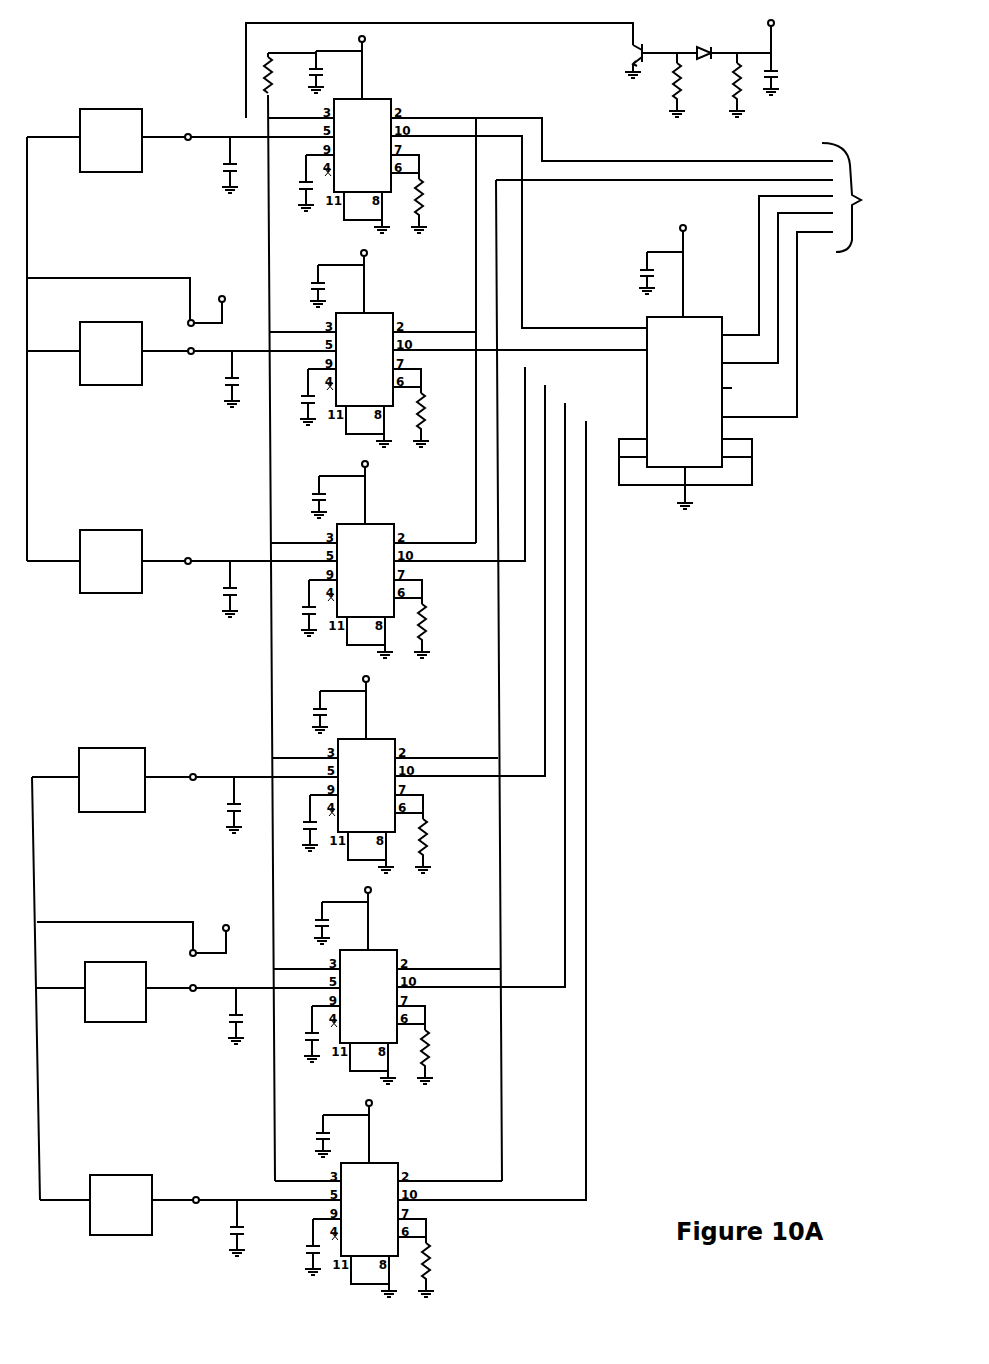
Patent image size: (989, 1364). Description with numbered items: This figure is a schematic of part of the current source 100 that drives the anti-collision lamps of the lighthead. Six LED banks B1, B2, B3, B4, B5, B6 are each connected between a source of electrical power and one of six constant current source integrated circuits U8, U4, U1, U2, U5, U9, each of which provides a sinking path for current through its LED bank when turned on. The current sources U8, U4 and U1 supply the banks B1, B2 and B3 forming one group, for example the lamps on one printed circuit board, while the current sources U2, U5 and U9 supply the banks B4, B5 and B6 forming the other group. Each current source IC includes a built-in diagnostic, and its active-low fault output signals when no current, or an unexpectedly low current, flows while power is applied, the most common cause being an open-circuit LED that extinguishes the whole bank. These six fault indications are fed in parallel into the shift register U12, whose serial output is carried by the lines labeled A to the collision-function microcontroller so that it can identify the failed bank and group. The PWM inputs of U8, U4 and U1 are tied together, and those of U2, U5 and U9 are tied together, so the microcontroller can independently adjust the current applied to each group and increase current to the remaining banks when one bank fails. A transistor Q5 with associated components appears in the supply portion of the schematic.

The current source 100 is at (462, 657).
The output signal bundle A is at (859, 197).
The constant current source U8 is at (365, 133).
The constant current source U4 is at (363, 347).
The constant current source U1 is at (369, 558).
The constant current source U2 is at (370, 773).
The constant current source U5 is at (367, 984).
The constant current source U9 is at (372, 1197).
The parallel in/serial out shift register U12 is at (722, 352).
The transistor Q5 is at (624, 57).
The LED bank B1 is at (111, 140).
The LED bank B2 is at (111, 353).
The LED bank B3 is at (111, 561).
The LED bank B4 is at (112, 780).
The LED bank B5 is at (115, 992).
The LED bank B6 is at (121, 1205).